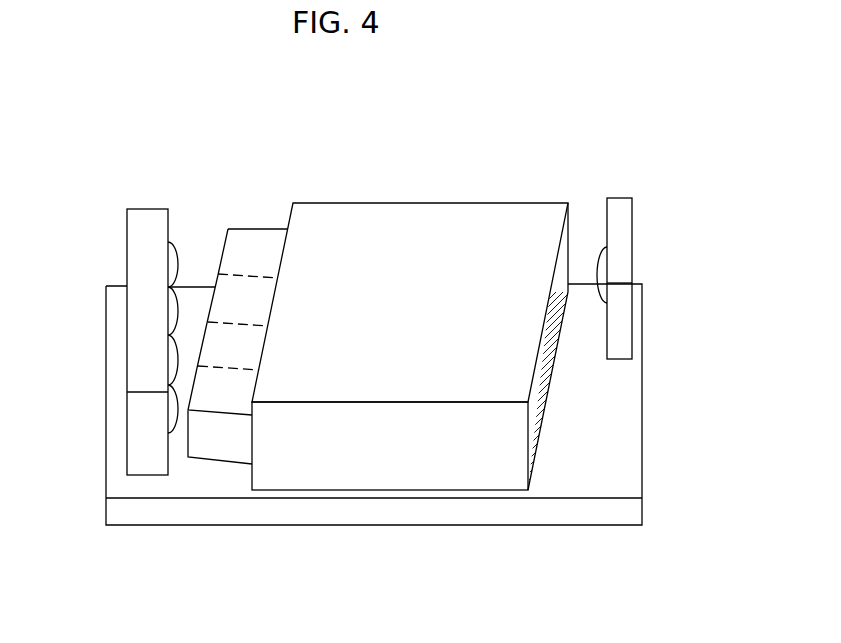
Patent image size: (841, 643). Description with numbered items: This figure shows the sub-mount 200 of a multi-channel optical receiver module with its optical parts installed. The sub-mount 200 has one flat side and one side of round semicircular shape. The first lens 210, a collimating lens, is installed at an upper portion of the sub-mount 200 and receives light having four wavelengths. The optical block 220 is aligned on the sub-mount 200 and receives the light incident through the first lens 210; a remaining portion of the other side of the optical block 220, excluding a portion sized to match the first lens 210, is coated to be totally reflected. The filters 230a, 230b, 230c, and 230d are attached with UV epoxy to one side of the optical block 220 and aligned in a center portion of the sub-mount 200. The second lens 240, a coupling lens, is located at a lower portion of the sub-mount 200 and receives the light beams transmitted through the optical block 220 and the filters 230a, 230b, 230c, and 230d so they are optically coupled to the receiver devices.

The sub-mount 200 is at (615, 472).
The first lens 210 is at (623, 273).
The optical block 220 is at (453, 240).
The filter 230a is at (253, 252).
The filter 230b is at (230, 300).
The filter 230c is at (242, 343).
The filter 230d is at (213, 399).
The second lens 240 is at (152, 318).